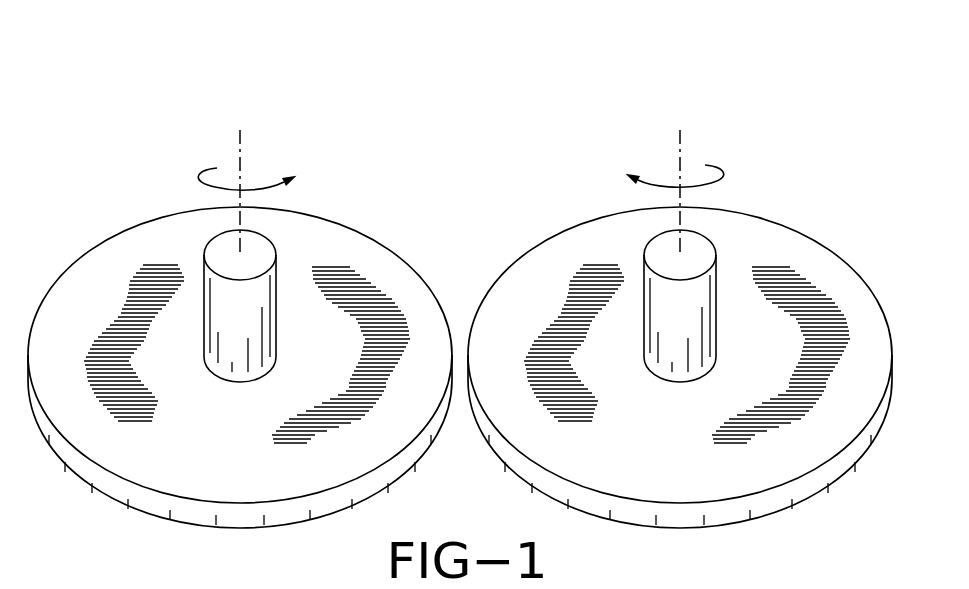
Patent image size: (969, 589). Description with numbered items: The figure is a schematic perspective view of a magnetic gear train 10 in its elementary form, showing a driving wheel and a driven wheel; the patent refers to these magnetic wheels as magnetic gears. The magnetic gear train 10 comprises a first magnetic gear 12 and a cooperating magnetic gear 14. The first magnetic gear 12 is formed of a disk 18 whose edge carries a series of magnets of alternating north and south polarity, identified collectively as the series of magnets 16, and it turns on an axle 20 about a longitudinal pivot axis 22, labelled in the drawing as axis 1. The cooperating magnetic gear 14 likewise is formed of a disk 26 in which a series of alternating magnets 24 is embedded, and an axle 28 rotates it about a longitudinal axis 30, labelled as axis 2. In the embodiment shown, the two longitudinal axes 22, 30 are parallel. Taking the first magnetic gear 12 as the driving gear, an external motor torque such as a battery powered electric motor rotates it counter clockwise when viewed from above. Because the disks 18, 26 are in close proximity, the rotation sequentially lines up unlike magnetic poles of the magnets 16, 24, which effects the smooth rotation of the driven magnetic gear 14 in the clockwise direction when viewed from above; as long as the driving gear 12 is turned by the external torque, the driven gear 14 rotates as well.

The magnetic gear train 10 is at (113, 114).
The first magnetic gear 12 is at (355, 208).
The cooperating magnetic gear 14 is at (567, 208).
The series of magnets of alternating polarity 16 is at (89, 241).
The series of alternating magnets 24 is at (835, 243).
The disk 18 is at (196, 429).
The disk 26 is at (643, 429).
The axle 20 is at (265, 316).
The axle 28 is at (705, 316).
The longitudinal pivot axis 22 is at (240, 153).
The longitudinal axis 30 is at (680, 150).
The axis 1 is at (240, 143).
The axis 2 is at (680, 140).